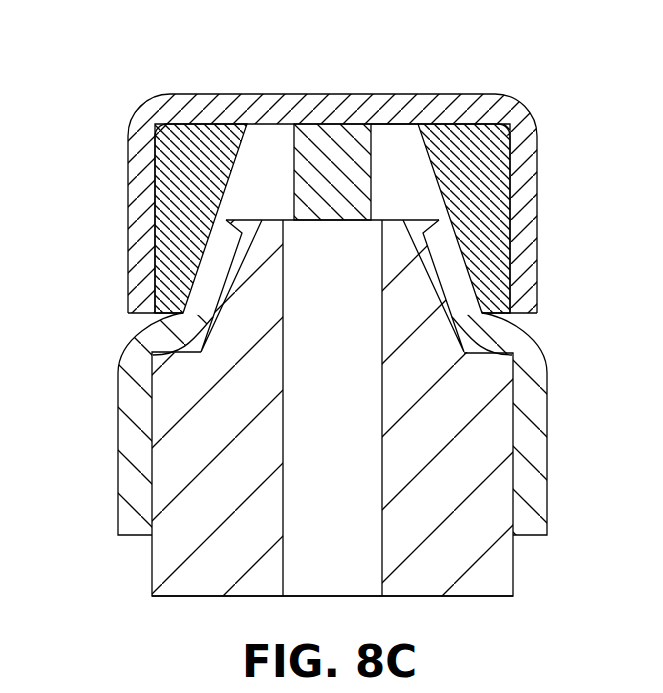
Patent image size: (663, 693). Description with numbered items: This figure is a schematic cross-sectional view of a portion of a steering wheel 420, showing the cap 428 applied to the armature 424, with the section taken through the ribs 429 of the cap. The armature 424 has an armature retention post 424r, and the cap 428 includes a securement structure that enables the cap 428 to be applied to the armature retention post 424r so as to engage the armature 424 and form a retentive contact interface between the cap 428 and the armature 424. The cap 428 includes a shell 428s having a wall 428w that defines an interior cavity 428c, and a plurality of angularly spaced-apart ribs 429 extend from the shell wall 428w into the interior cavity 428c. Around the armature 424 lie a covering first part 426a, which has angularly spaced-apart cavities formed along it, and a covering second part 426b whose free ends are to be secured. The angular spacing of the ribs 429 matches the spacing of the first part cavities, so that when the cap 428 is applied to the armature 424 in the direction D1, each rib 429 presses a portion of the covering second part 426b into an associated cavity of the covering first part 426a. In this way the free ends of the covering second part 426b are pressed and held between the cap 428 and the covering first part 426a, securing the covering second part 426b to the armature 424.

The steering wheel 420 is at (185, 612).
The armature 424 is at (322, 457).
The armature retention post 424r is at (320, 173).
The covering first part 426a is at (180, 405).
The covering second part 426b is at (205, 293).
The cap 428 is at (290, 163).
The shell 428s is at (195, 95).
The wall 428w is at (248, 125).
The interior cavity 428c is at (395, 160).
The ribs 429 is at (180, 193).
The direction D1 is at (336, 8).